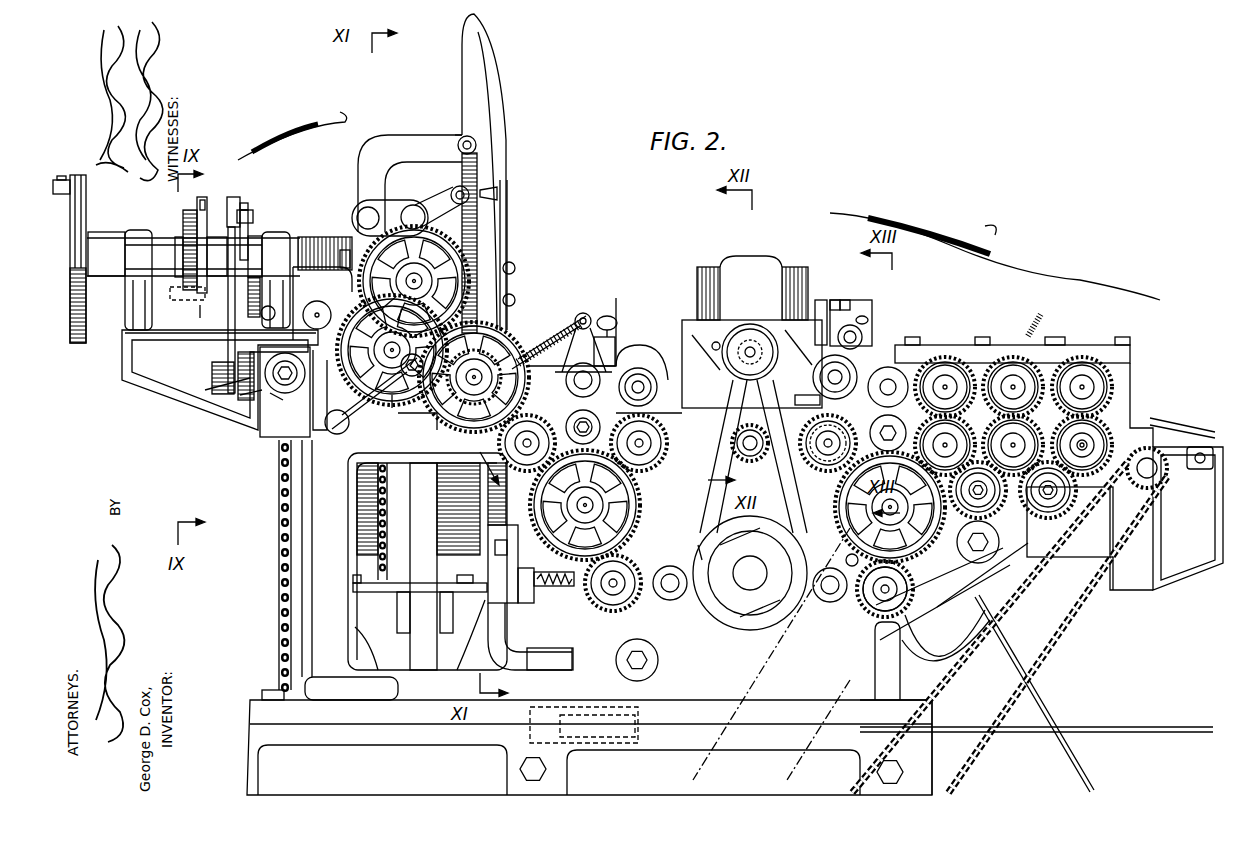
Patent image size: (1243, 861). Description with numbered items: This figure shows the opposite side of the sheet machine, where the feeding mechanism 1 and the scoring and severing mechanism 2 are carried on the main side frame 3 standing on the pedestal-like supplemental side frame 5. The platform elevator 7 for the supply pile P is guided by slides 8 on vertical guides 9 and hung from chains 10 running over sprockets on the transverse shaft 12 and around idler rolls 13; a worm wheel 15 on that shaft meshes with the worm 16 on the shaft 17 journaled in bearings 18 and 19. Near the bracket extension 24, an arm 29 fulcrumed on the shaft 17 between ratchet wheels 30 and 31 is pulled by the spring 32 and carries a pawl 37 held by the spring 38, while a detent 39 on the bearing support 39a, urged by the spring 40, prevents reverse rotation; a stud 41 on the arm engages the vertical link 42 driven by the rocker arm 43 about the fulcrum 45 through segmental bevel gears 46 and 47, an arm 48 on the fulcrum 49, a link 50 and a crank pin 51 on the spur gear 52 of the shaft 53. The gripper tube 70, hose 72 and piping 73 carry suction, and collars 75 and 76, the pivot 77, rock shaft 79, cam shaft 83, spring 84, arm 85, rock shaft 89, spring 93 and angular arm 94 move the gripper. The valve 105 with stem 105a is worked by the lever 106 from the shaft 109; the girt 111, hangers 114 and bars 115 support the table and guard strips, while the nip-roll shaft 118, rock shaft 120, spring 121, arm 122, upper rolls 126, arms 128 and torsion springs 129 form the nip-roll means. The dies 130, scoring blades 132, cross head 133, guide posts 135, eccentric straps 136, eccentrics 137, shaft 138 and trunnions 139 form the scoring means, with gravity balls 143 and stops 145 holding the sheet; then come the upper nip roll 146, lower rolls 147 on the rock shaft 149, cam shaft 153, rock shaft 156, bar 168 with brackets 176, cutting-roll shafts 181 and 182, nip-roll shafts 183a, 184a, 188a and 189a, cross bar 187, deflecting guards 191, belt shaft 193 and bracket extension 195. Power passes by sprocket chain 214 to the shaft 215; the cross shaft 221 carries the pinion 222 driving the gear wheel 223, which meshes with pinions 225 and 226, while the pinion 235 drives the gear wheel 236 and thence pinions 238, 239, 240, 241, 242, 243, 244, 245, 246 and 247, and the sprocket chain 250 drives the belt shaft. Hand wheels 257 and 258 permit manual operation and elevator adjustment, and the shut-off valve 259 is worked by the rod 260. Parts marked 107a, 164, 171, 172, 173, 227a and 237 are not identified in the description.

The feeding mechanism 1 is at (292, 131).
The scoring and severing mechanism 2 is at (995, 256).
The main side frame 3 is at (320, 600).
The supplemental side frame 5 is at (262, 740).
The platform elevator 7 is at (362, 567).
The slide 8 is at (372, 636).
The vertical guide 9 is at (423, 566).
The chain 10 is at (376, 492).
The transverse shaft 12 is at (314, 326).
The grooved idler roll 13 is at (506, 571).
The worm wheel 15 is at (345, 250).
The worm 16 is at (316, 237).
The shaft 17 is at (170, 240).
The bearing 18 is at (127, 293).
The bearing 19 is at (280, 232).
The bracket extension 24 is at (152, 388).
The arm 29 is at (246, 203).
The ratchet wheel 30 is at (248, 212).
The ratchet wheel 31 is at (180, 295).
The helical tension spring 32 is at (261, 293).
The pawl 37 is at (234, 197).
The spring 38 is at (207, 212).
The detent 39 is at (205, 200).
The bearing support 39a is at (200, 311).
The spring 40 is at (183, 230).
The stud 41 is at (253, 222).
The vertical link 42 is at (228, 350).
The rocker arm 43 is at (205, 393).
The fixed fulcrum 45 is at (212, 372).
The segmental bevel gear 46 is at (240, 400).
The segmental bevel gear 47 is at (245, 400).
The arm 48 is at (300, 400).
The fixed fulcrum 49 is at (283, 393).
The link 50 is at (350, 426).
The crank pin 51 is at (408, 370).
The spur gear 52 is at (392, 410).
The transverse rotary shaft 53 is at (392, 350).
The tube 70 is at (477, 147).
The flexible hose 72 is at (488, 58).
The piping 73 is at (514, 298).
The collar 75 is at (507, 188).
The collar 76 is at (513, 266).
The pivot 77 is at (500, 193).
The rock shaft 79 is at (410, 205).
The rotary shaft 83 is at (414, 281).
The helical tension spring 84 is at (477, 231).
The arm 85 is at (452, 194).
The rock shaft 89 is at (362, 208).
The helical spring 93 is at (462, 140).
The angular arm 94 is at (406, 135).
The valve 105 is at (511, 564).
The valve stem 105a is at (538, 590).
The lever 106 is at (545, 652).
The gear 107a is at (828, 443).
The rotary shaft 109 is at (602, 518).
The girt 111 is at (583, 424).
The hanger 114 is at (606, 316).
The transverse supporting bar 115 is at (614, 337).
The transverse rotary shaft 118 is at (540, 425).
The rock shaft 120 is at (566, 382).
The spring 121 is at (545, 345).
The vertical arm 122 is at (582, 313).
The upper nip roll 126 is at (644, 345).
The arm 128 is at (638, 368).
The torsion spring 129 is at (458, 428).
The fixed die member 130 is at (430, 412).
The scoring blade 132 is at (390, 218).
The cross head 133 is at (750, 324).
The guide post 135 is at (770, 266).
The eccentric strap 136 is at (712, 505).
The eccentric 137 is at (750, 630).
The rotary shaft 138 is at (750, 572).
The pivot trunnion 139 is at (752, 364).
The gravity ball 143 is at (722, 372).
The fixed stop 145 is at (712, 347).
The upper nip roll 146 is at (805, 358).
The lower nip roll 147 is at (738, 446).
The rock shaft 149 is at (893, 367).
The transverse shaft 153 is at (906, 580).
The rock shaft 156 is at (846, 556).
The block 164 is at (801, 395).
The bar 168 is at (862, 330).
The bar 171 is at (820, 300).
The block 172 is at (835, 300).
The block 173 is at (848, 302).
The suspension bracket 176 is at (870, 307).
The transverse rotary shaft 181 is at (1012, 372).
The transverse rotary shaft 182 is at (1040, 506).
The shaft 183a is at (945, 372).
The shaft 184a is at (945, 445).
The cross bar 187 is at (1033, 320).
The shaft 188a is at (1085, 372).
The shaft 189a is at (1097, 440).
The deflecting guard 191 is at (1196, 420).
The shaft 193 is at (1158, 474).
The bracket extension 195 is at (1200, 565).
The sprocket chain 214 is at (780, 680).
The shaft 215 is at (876, 628).
The cross shaft 221 is at (631, 600).
The spur pinion 222 is at (666, 570).
The gear wheel 223 is at (710, 525).
The spur pinion 225 is at (490, 490).
The spur pinion 226 is at (649, 466).
The pin 227a is at (698, 545).
The spur pinion 235 is at (832, 602).
The gear wheel 236 is at (860, 576).
The gear 237 is at (804, 440).
The pinion 238 is at (818, 528).
The pinion 239 is at (742, 436).
The pinion 240 is at (888, 429).
The pinion 241 is at (1012, 350).
The pinion 242 is at (1000, 537).
The pinion 243 is at (1030, 436).
The pinion 244 is at (977, 350).
The pinion 245 is at (1070, 538).
The pinion 246 is at (1088, 428).
The pinion 247 is at (1050, 350).
The sprocket chain connection 250 is at (1092, 596).
The hand wheel 257 is at (960, 690).
The hand wheel 258 is at (78, 343).
The auxiliary suction shut-off valve 259 is at (640, 681).
The rod 260 is at (1120, 727).
The supply pile P is at (365, 525).